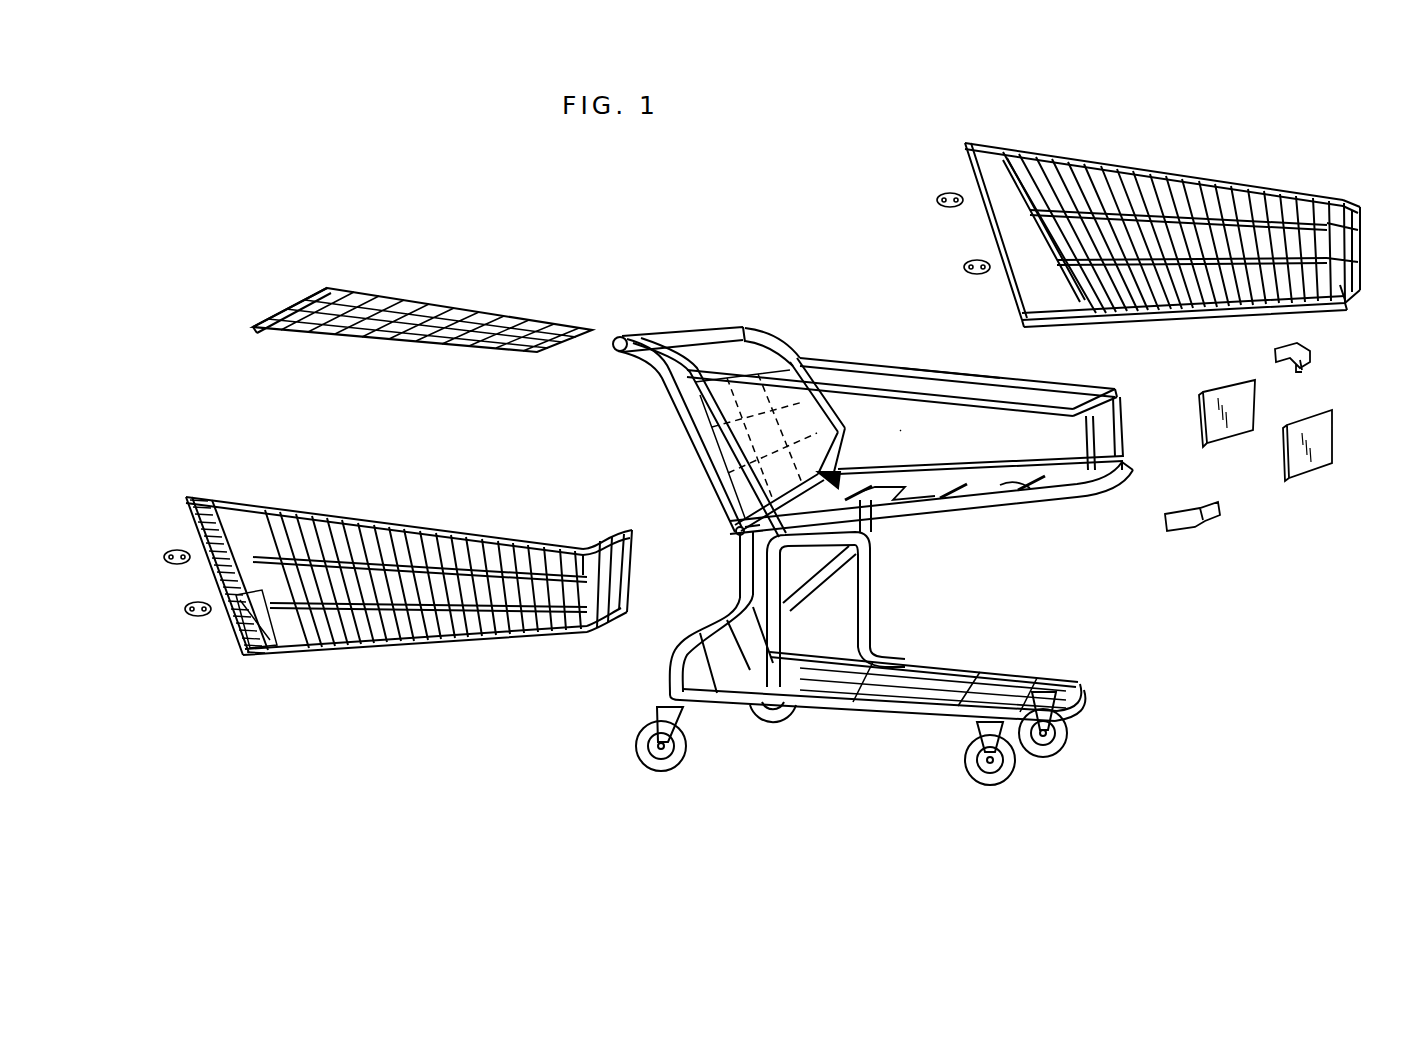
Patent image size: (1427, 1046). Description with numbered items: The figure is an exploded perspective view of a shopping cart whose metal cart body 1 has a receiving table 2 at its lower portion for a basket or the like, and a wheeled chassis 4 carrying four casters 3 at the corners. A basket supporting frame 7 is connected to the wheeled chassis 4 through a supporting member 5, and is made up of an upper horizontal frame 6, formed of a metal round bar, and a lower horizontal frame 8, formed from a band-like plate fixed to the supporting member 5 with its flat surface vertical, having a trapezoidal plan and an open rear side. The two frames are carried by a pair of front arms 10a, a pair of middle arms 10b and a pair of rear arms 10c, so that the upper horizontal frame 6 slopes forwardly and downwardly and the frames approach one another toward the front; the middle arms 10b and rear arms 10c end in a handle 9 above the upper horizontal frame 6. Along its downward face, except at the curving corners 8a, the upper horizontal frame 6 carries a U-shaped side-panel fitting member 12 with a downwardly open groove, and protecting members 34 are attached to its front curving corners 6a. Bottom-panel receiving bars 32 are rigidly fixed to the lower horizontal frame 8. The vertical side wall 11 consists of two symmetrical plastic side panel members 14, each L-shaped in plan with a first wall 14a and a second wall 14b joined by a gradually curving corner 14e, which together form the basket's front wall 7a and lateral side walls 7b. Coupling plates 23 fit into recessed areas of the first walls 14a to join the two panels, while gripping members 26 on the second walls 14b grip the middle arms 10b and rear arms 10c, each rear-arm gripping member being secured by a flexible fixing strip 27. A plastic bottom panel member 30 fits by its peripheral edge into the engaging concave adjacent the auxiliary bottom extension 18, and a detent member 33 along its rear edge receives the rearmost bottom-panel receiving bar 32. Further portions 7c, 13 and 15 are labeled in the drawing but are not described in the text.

The cart body 1 is at (1072, 664).
The receiving table 2 is at (908, 695).
The casters 3 is at (1045, 752).
The wheeled chassis 4 is at (808, 710).
The supporting member 5 is at (843, 540).
The upper horizontal frame 6 is at (1030, 382).
The front curving corners 6a is at (1067, 400).
The basket supporting frame 7 is at (893, 366).
The front wall 7a is at (1088, 494).
The lateral side walls 7b is at (912, 395).
The lower side rail 7c is at (940, 498).
The lower horizontal frame 8 is at (983, 510).
The curving corners 8a is at (1010, 486).
The handle 9 is at (700, 333).
The front arms 10a is at (1120, 424).
The middle arms 10b is at (710, 483).
The rear arms 10c is at (677, 421).
The vertical side wall 11 is at (1215, 180).
The side-panel fitting member 12 is at (1118, 408).
The rear mesh panel 13 is at (770, 395).
The side panel members 14 is at (1268, 200).
The first wall 14a is at (1350, 300).
The second wall 14b is at (1057, 170).
The curving corner 14e is at (1360, 230).
The side wall top rail 15 is at (1140, 165).
The auxiliary bottom extension 18 is at (1210, 312).
The coupling plates 23 is at (1300, 455).
The gripping members 26 is at (222, 508).
The fixing strip 27 is at (975, 262).
The bottom panel member 30 is at (436, 300).
The bottom-panel receiving bars 32 is at (1030, 480).
The detent member 33 is at (255, 330).
The protecting members 34 is at (1195, 530).